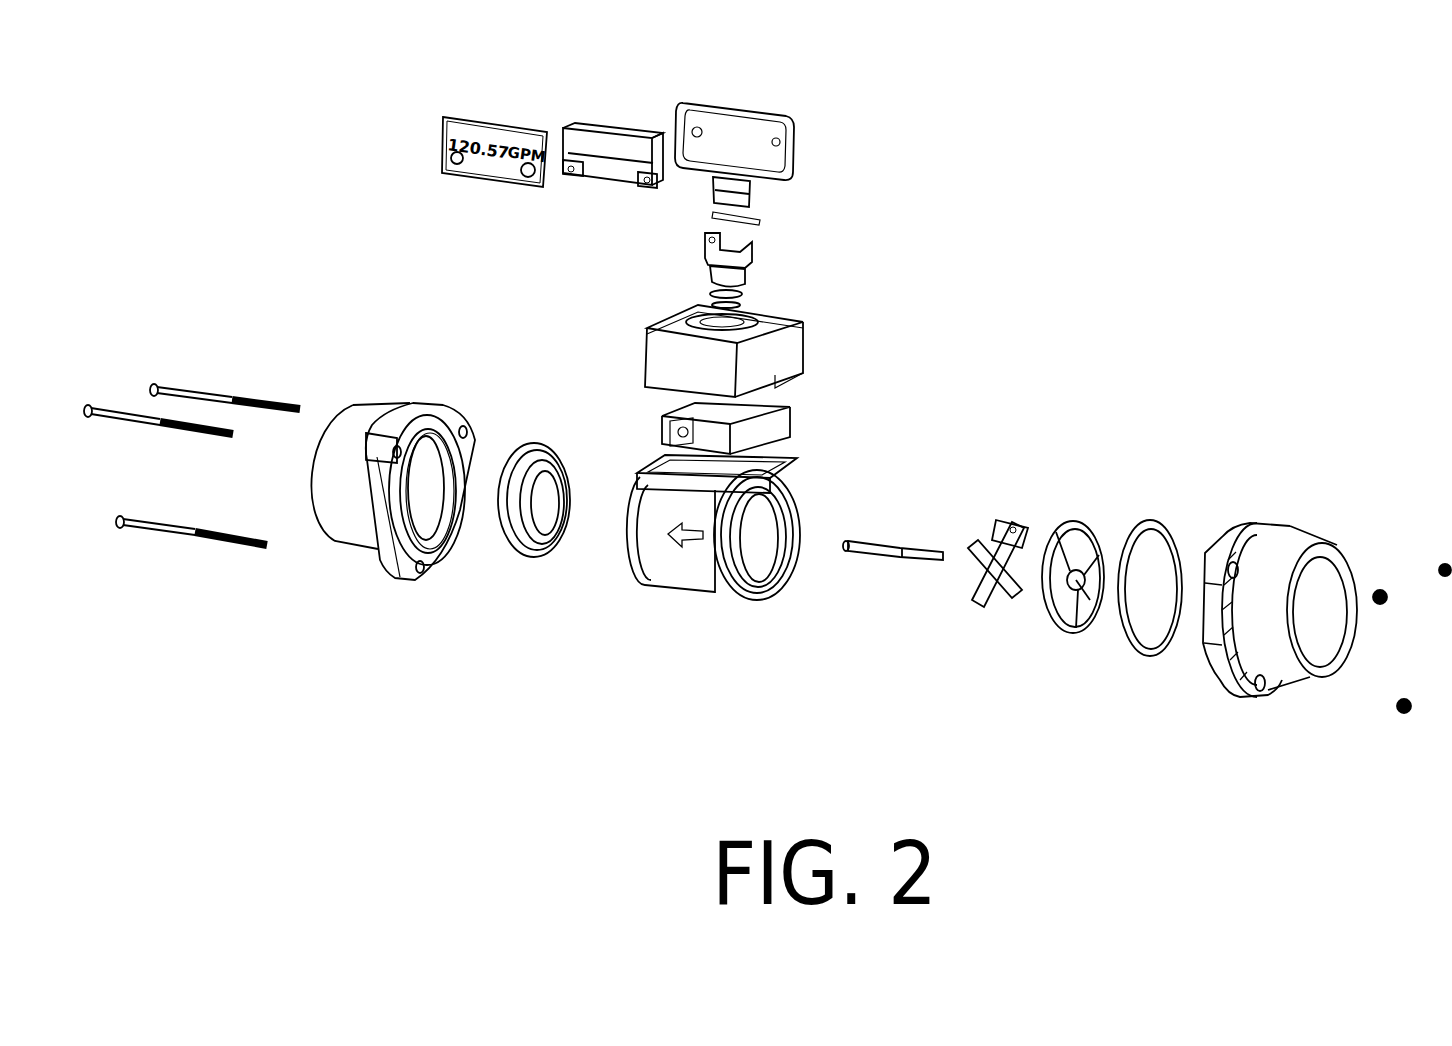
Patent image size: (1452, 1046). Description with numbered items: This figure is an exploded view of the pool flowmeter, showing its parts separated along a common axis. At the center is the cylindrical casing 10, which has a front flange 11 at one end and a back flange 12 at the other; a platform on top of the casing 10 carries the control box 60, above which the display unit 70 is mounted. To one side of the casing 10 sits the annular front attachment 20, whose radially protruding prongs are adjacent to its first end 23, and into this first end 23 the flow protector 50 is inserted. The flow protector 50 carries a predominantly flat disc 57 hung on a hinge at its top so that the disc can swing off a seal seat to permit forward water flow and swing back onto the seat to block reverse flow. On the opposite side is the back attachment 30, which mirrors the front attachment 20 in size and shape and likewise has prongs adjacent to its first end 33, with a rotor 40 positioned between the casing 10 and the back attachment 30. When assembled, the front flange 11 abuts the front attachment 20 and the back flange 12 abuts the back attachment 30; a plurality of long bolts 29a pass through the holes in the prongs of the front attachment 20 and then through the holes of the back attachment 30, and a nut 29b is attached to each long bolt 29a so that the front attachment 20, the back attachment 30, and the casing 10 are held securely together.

The casing 10 is at (738, 546).
The front flange 11 is at (648, 462).
The back flange 12 is at (800, 487).
The front attachment 20 is at (361, 496).
The first end 23 is at (462, 418).
The long bolts 29a is at (212, 553).
The nut 29b is at (1404, 708).
The back attachment 30 is at (1252, 598).
The first end 33 is at (1224, 537).
The rotor 40 is at (980, 607).
The flow protector 50 is at (510, 618).
The flat disc 57 is at (543, 517).
The control box 60 is at (790, 352).
The display unit 70 is at (793, 152).